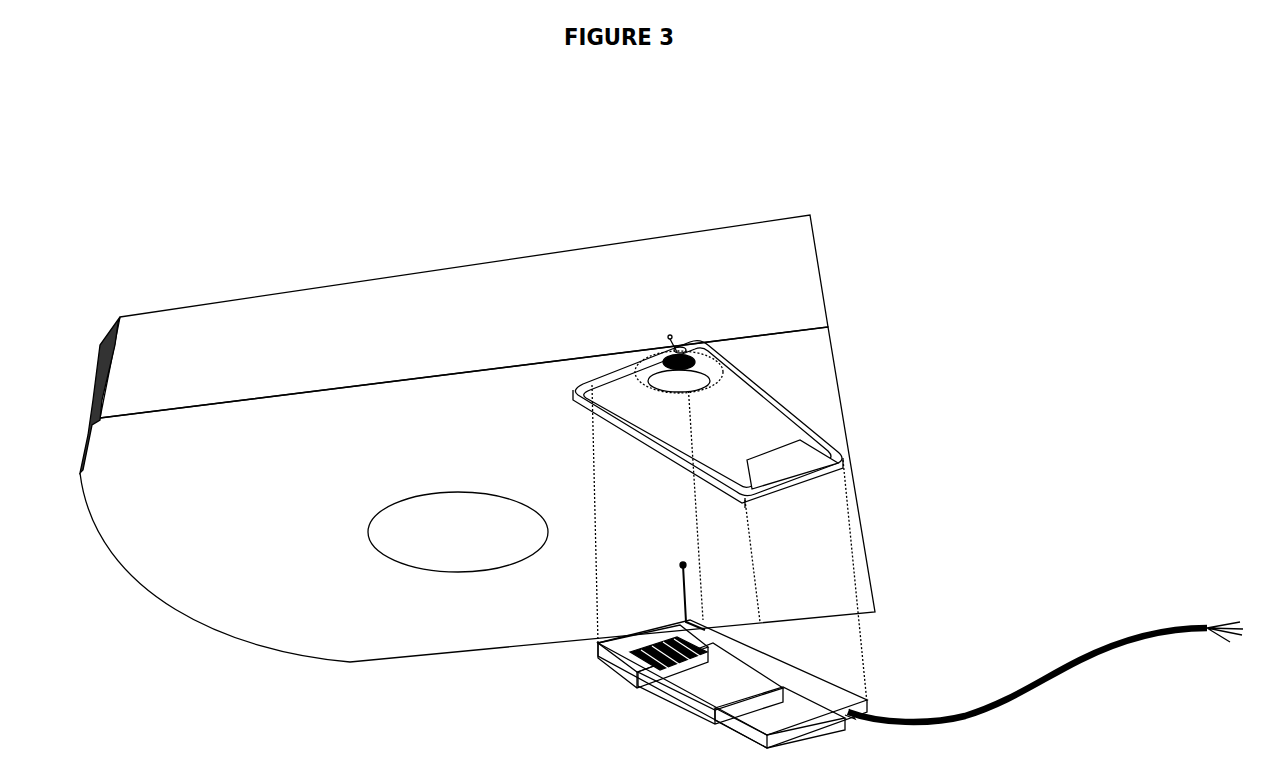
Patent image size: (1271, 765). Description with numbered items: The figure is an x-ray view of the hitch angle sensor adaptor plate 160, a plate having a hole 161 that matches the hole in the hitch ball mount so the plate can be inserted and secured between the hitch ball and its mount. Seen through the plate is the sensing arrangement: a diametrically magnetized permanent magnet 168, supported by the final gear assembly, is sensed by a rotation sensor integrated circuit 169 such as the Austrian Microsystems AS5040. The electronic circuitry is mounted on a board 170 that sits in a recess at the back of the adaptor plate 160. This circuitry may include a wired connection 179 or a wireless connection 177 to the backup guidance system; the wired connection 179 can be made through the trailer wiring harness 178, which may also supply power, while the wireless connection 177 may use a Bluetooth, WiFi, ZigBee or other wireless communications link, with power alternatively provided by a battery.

The adaptor plate 160 is at (229, 628).
The hole 161 is at (458, 532).
The diametrically magnetized permanent magnet 168 is at (695, 368).
The rotation sensor integrated circuit 169 is at (645, 688).
The board 170 is at (783, 663).
The wireless connection 177 is at (687, 592).
The trailer wiring harness 178 is at (1057, 668).
The wired connection 179 is at (1230, 643).